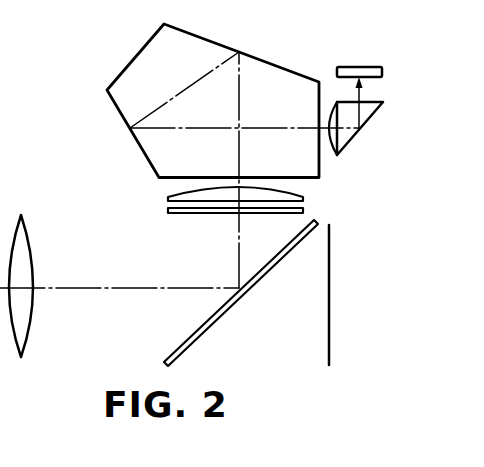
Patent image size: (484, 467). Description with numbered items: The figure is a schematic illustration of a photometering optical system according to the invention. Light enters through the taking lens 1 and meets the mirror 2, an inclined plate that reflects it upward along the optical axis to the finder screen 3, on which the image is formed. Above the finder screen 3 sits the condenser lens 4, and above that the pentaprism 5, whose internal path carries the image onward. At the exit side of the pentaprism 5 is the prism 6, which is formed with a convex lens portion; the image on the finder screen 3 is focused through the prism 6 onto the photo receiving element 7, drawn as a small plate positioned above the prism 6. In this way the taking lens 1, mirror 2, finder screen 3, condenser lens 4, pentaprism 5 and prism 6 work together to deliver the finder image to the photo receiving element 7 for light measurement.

The taking lens 1 is at (32, 323).
The mirror 2 is at (203, 334).
The finder screen 3 is at (168, 207).
The condenser lens 4 is at (173, 197).
The pentaprism 5 is at (219, 44).
The prism 6 is at (366, 123).
The photo receiving element 7 is at (369, 67).